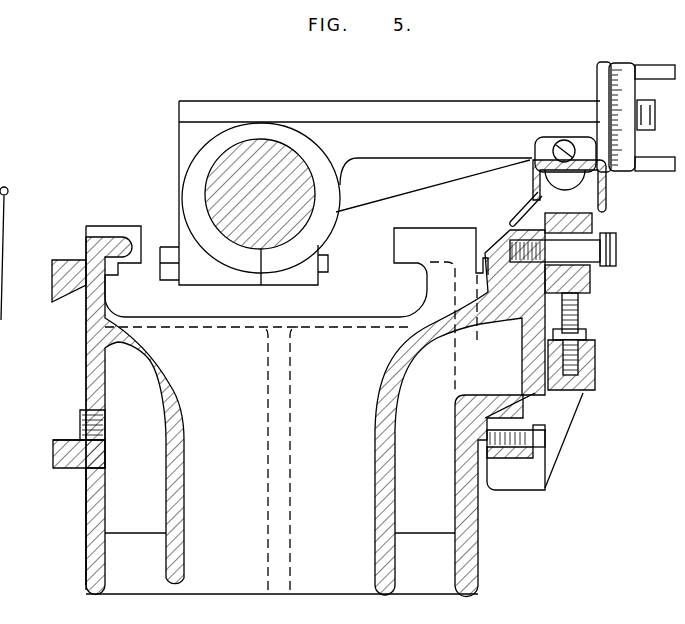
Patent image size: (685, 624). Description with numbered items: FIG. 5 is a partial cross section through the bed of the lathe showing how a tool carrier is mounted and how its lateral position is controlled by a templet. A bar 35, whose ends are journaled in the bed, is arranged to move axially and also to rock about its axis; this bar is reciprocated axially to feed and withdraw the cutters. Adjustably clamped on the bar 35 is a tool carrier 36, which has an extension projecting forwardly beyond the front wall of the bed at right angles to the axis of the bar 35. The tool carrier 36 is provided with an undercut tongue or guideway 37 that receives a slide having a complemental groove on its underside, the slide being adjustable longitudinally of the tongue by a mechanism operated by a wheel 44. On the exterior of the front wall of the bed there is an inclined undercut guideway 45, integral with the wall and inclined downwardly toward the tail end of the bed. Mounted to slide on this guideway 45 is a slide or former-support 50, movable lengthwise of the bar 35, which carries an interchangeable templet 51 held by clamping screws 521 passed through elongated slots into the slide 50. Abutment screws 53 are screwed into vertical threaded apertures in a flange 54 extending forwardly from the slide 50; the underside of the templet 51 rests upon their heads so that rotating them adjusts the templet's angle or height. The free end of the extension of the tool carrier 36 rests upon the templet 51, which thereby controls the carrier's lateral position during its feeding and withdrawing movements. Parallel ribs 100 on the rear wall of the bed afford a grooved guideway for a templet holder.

The parallel ribs 100 is at (56, 287).
The bar 35 is at (248, 250).
The tool carrier 36 is at (263, 135).
The undercut tongue or guideway 37 is at (365, 112).
The wheel 44 is at (632, 80).
The inclined undercut guideway or tongue 45 is at (478, 420).
The slide or former-support 50 is at (560, 400).
The templet 51 is at (596, 279).
The clamping screws 521 is at (580, 251).
The abutment screws 53 is at (582, 323).
The flange 54 is at (598, 356).